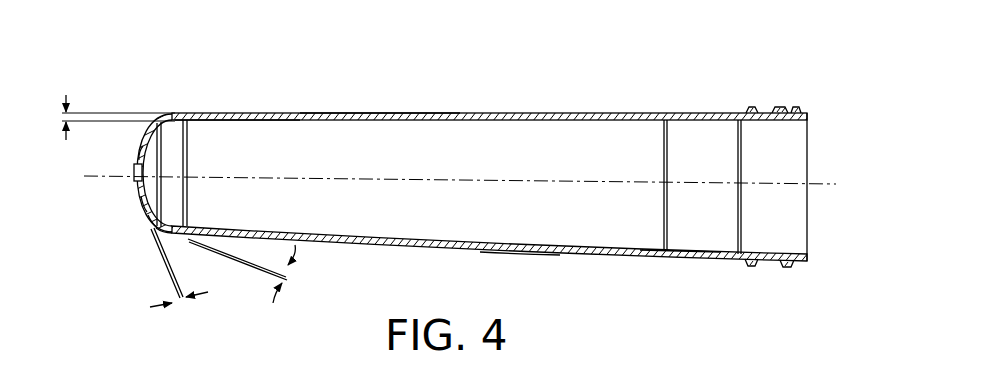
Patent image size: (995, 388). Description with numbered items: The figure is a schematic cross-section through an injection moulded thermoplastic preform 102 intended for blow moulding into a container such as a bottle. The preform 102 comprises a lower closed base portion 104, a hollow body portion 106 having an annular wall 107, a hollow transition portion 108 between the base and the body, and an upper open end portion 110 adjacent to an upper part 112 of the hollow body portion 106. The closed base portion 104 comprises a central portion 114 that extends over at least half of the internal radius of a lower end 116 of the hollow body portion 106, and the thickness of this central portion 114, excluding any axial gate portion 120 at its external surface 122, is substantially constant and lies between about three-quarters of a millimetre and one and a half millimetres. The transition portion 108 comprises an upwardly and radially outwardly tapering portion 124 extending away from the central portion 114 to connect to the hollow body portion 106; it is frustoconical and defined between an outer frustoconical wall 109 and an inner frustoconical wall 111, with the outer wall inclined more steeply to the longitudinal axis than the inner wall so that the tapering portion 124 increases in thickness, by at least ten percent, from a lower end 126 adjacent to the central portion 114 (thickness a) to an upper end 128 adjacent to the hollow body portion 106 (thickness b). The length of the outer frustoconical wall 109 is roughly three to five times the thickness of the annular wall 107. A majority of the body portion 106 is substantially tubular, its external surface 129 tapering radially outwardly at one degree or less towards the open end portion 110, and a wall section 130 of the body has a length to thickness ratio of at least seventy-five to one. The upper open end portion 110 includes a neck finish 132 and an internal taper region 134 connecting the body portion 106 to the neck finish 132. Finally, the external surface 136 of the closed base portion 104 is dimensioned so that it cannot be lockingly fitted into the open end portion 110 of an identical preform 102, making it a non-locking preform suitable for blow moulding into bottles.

The injection moulded thermoplastic preform 102 is at (585, 80).
The lower closed base portion 104 is at (150, 148).
The hollow body portion 106 is at (423, 113).
The annular wall 107 is at (372, 113).
The hollow transition portion 108 is at (178, 122).
The outer frustoconical wall 109 is at (166, 122).
The upper open end portion 110 is at (765, 108).
The inner frustoconical wall 111 is at (188, 125).
The upper part of the hollow body portion 112 is at (702, 113).
The central portion 114 is at (143, 203).
The lower end of the hollow body portion 116 is at (203, 116).
The axial gate portion 120 is at (133, 178).
The external surface of the central portion 122 is at (138, 162).
The tapering portion 124 is at (160, 120).
The lower end of the tapering portion 126 is at (153, 234).
The upper end of the tapering portion 128 is at (183, 240).
The external surface of the body portion 129 is at (602, 258).
The wall section 130 is at (545, 256).
The neck finish 132 is at (765, 263).
The internal taper region 134 is at (700, 248).
The external surface of the closed base portion 136 is at (150, 220).